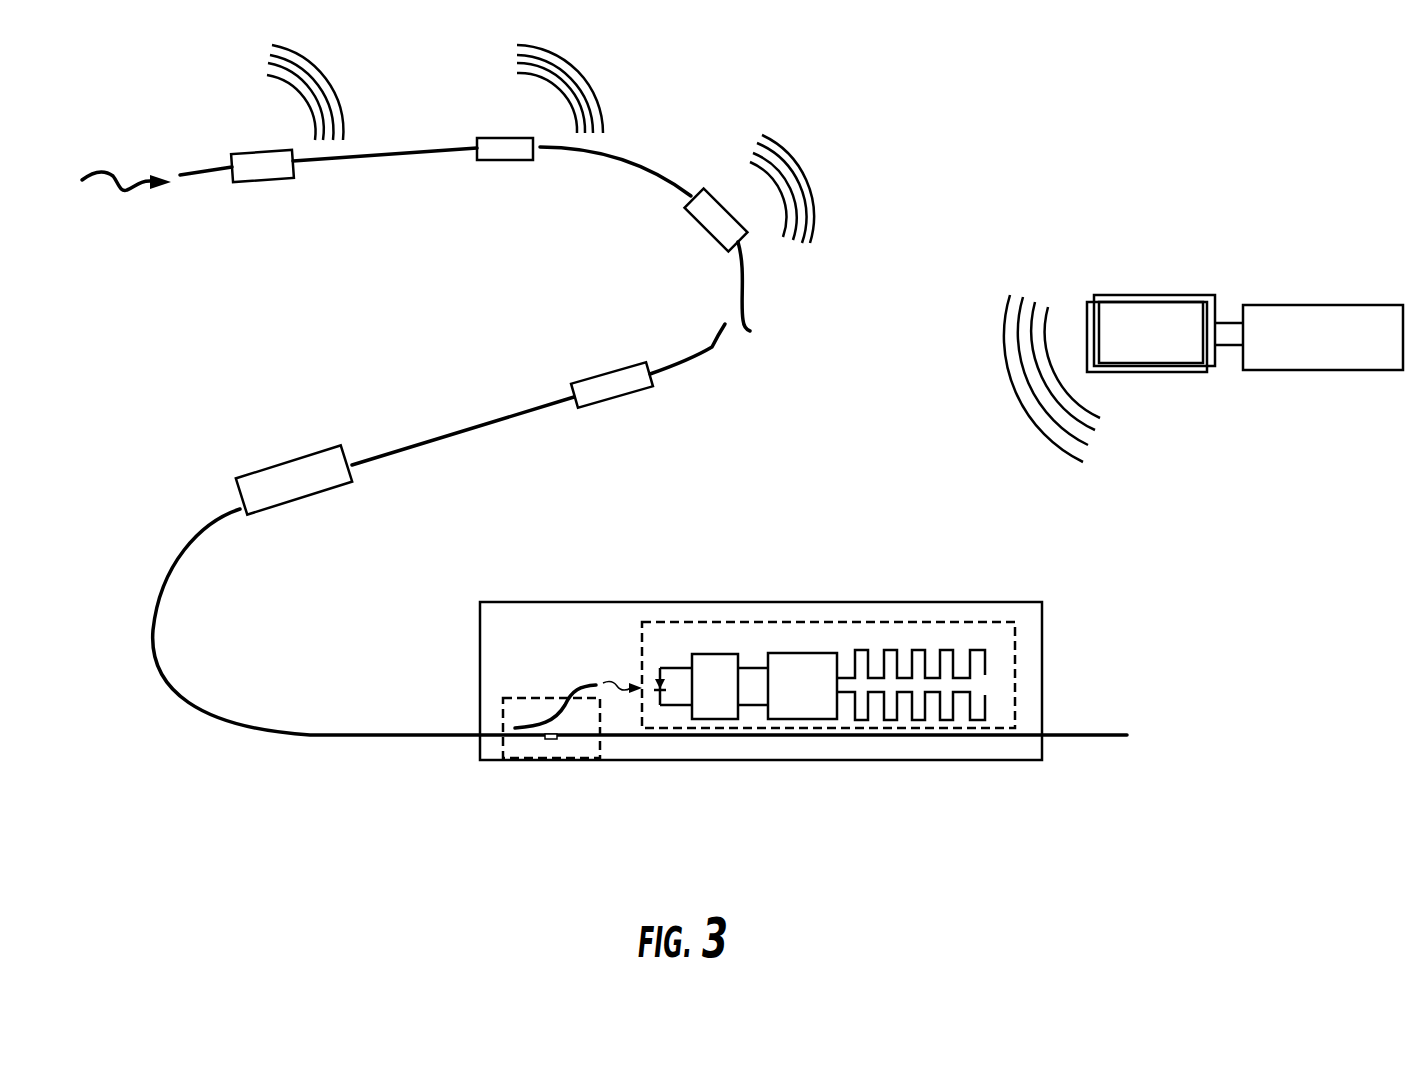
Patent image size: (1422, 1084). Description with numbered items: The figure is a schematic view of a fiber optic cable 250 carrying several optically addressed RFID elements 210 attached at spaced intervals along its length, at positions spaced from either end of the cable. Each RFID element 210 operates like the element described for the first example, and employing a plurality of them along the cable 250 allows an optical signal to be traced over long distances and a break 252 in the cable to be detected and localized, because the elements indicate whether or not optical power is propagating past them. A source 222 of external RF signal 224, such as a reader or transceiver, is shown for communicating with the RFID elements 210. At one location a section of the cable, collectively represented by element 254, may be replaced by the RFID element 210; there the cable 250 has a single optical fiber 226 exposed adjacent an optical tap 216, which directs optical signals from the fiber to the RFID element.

The optically addressed RFID element 210 is at (256, 181).
The optical tap 216 is at (521, 767).
The source of external RF signal 222 is at (1189, 276).
The external RF signal 224 is at (1018, 388).
The optical fiber 226 is at (550, 740).
The fiber optic cable 250 is at (1080, 737).
The break 252 is at (739, 331).
The section of the cable 254 is at (583, 739).